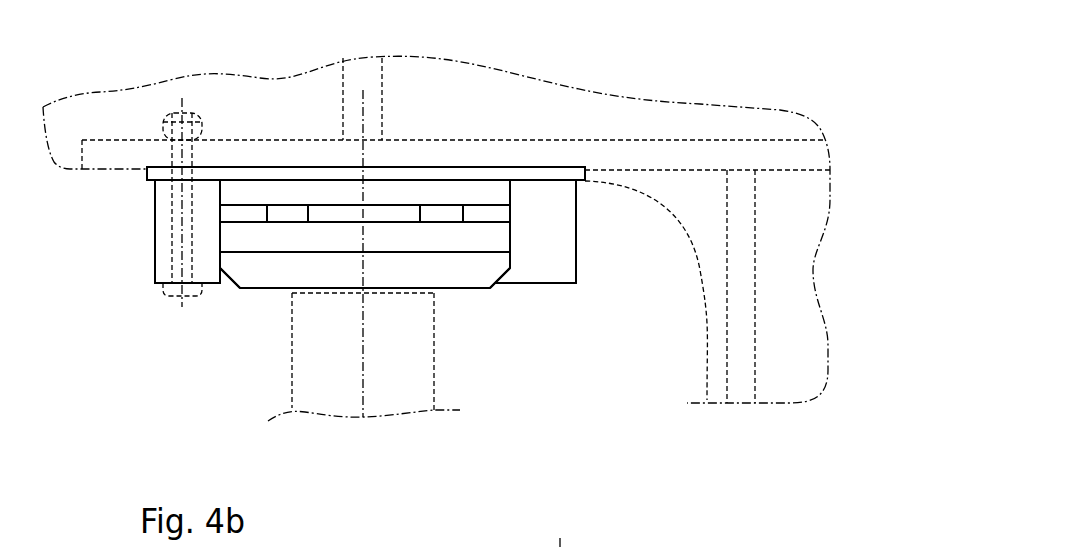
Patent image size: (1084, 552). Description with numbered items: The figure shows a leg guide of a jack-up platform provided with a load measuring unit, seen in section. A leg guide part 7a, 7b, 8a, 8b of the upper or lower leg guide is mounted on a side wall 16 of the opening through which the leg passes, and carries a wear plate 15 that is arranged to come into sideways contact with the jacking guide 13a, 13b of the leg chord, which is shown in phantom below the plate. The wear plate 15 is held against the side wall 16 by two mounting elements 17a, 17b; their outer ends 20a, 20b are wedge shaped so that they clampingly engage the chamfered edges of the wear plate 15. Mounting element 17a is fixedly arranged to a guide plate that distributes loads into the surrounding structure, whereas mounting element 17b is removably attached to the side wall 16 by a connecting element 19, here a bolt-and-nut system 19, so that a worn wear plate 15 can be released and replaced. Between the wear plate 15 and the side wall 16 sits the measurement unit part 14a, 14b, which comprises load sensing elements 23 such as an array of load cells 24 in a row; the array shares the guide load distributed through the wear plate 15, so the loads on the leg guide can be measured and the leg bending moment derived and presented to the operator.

The leg guide part 7a is at (112, 374).
The leg guide part 7b is at (112, 374).
The leg guide part 8a is at (112, 374).
The leg guide part 8b is at (186, 329).
The jacking guide 13a is at (359, 385).
The jacking guide 13b is at (327, 393).
The measurement unit part 14a is at (375, 133).
The measurement unit part 14b is at (483, 238).
The wear plate 15 is at (375, 186).
The side wall 16 is at (101, 173).
The mounting element 17a is at (560, 248).
The mounting element 17b is at (163, 247).
The connecting element 19 is at (186, 255).
The outer end 20a is at (521, 275).
The outer end 20b is at (222, 272).
The load sensing element 23 is at (245, 213).
The load cell 24 is at (293, 213).